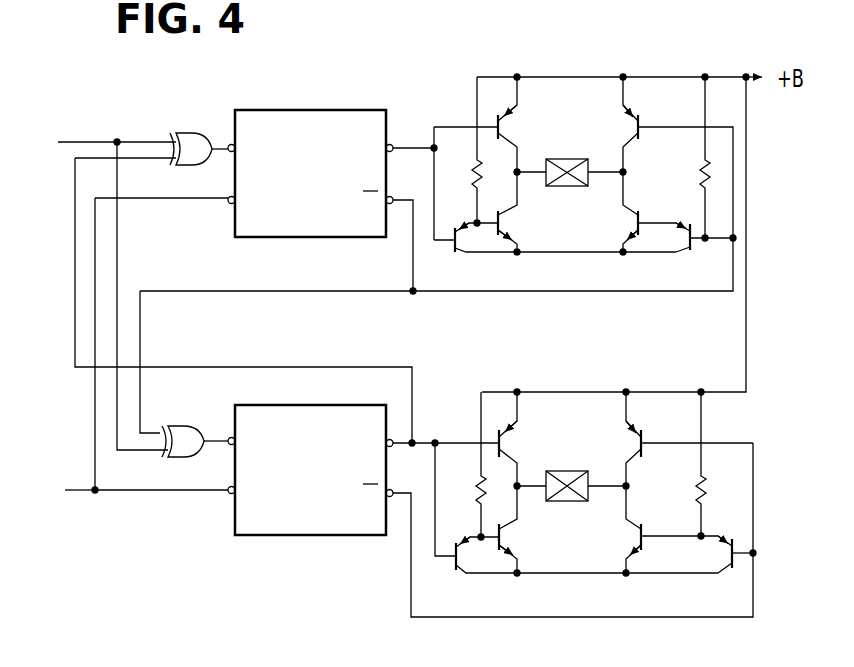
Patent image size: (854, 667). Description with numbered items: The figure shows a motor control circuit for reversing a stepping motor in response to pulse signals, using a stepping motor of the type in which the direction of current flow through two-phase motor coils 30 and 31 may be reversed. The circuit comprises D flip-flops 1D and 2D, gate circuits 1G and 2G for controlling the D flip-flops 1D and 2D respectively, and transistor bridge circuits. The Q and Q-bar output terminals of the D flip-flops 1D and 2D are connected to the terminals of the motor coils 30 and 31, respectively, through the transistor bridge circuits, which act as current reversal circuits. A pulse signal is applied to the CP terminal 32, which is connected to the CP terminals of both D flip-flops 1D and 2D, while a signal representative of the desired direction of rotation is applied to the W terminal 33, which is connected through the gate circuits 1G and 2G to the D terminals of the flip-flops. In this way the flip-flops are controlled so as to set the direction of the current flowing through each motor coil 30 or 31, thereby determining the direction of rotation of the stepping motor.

The W terminal 33 is at (80, 140).
The gate circuit 1G is at (195, 133).
The D flip-flop 1D is at (302, 108).
The motor coil 30 is at (565, 188).
The gate circuit 2G is at (183, 426).
The D flip-flop 2D is at (293, 537).
The motor coil 31 is at (565, 503).
The CP terminal 32 is at (78, 494).